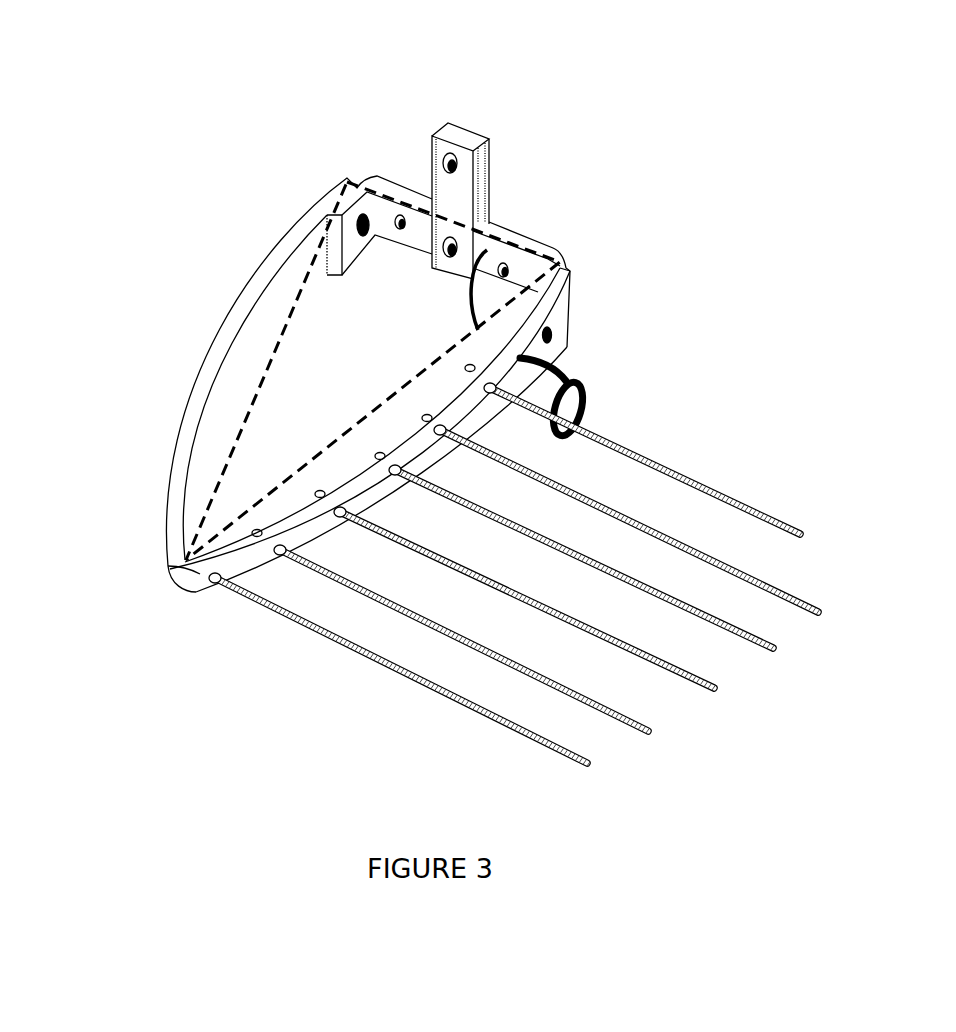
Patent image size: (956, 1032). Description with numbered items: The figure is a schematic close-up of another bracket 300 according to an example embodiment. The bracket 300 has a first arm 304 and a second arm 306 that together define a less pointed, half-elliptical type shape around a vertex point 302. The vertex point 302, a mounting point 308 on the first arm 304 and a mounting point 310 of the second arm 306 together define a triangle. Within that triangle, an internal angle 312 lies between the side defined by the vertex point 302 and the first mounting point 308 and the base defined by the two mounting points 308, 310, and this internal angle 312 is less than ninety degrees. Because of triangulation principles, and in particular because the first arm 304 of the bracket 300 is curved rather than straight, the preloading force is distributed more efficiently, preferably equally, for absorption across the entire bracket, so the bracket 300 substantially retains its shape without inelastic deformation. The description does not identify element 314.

The bracket 300 is at (188, 258).
The vertex point 302 is at (172, 572).
The first arm 304 is at (474, 420).
The second arm 306 is at (190, 443).
The mounting point 308 is at (568, 278).
The mounting point 310 is at (333, 182).
The internal angle 312 is at (478, 293).
The vertical mounting block 314 is at (430, 213).